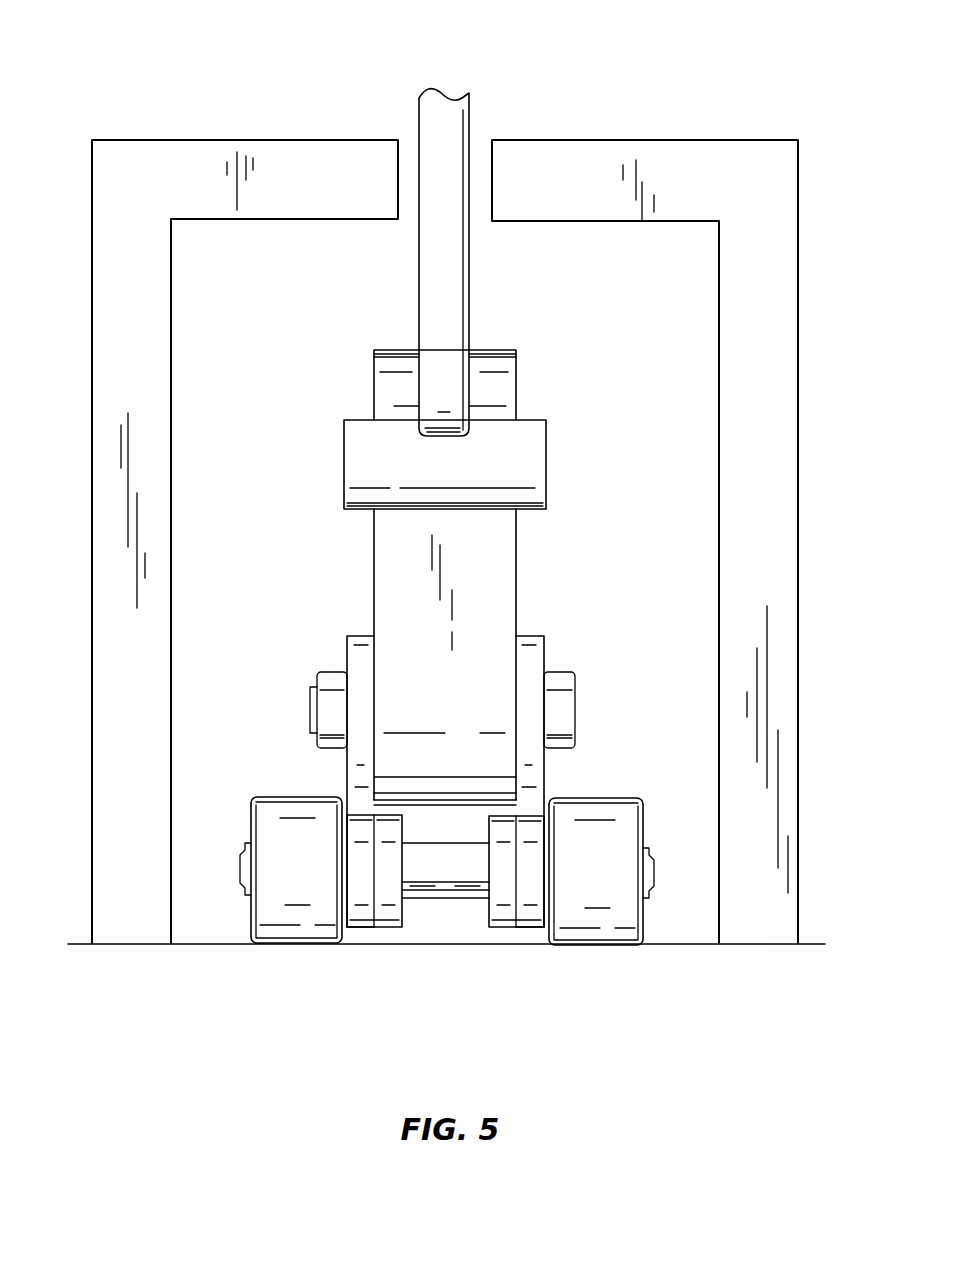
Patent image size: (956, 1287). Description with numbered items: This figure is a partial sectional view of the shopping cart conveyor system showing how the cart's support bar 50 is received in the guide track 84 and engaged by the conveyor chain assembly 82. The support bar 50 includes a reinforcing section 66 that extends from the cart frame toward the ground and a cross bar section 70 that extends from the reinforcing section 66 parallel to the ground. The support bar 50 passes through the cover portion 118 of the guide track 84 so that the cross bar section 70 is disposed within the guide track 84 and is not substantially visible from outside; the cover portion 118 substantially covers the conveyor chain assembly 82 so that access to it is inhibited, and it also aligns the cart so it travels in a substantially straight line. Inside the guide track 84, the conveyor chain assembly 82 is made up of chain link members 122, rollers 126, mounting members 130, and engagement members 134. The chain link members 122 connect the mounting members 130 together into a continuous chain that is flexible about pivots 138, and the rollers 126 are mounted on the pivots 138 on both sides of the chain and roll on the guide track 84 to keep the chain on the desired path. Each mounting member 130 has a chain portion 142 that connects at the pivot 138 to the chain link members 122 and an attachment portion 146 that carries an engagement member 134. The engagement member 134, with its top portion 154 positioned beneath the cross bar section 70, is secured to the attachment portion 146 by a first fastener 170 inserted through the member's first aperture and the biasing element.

The support bar 50 is at (399, 118).
The reinforcing section 66 is at (450, 128).
The cross bar section 70 is at (527, 432).
The conveyor chain assembly 82 is at (270, 527).
The guide track 84 is at (446, 521).
The cover portion 118 is at (581, 168).
The chain link members 122 is at (403, 885).
The rollers 126 is at (630, 912).
The mounting members 130 is at (382, 913).
The engagement members 134 is at (505, 538).
The pivots 138 is at (473, 887).
The chain portion 142 is at (530, 913).
The attachment portion 146 is at (530, 780).
The top portion 154 is at (395, 350).
The first fastener 170 is at (570, 705).